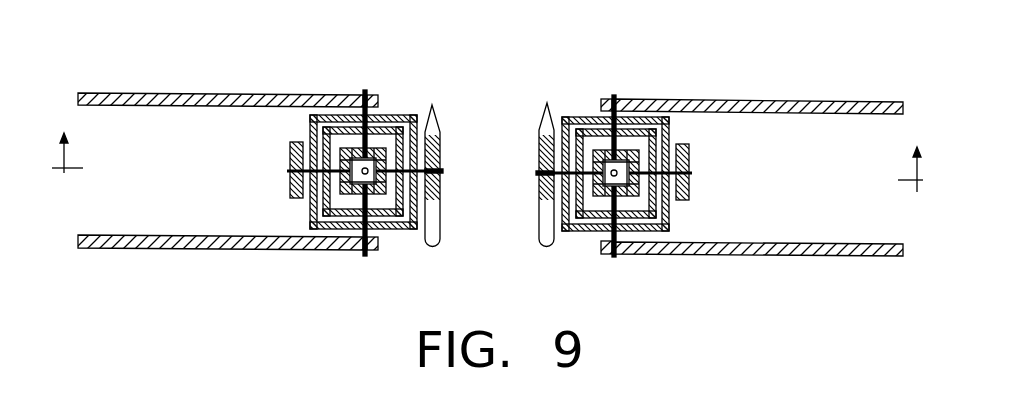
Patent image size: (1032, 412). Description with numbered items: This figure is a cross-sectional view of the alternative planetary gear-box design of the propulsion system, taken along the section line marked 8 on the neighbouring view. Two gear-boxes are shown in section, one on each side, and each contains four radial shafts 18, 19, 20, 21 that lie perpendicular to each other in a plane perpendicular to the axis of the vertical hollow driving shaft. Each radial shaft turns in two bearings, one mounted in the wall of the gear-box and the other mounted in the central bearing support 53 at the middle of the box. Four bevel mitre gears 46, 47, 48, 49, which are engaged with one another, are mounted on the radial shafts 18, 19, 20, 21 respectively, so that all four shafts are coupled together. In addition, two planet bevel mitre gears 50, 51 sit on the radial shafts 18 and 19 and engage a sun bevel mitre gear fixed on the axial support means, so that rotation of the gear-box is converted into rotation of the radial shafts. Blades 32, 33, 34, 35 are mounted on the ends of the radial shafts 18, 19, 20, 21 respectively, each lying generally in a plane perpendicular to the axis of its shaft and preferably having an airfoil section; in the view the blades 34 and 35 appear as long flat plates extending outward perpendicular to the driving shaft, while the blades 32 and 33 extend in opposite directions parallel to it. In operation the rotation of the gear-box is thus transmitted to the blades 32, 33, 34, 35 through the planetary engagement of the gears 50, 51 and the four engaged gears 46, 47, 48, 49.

The section line 8- 8 is at (487, 162).
The radial shaft 18 is at (287, 172).
The radial shaft 19 is at (538, 173).
The radial shaft 20 is at (365, 254).
The radial shaft 21 is at (365, 90).
The blade 32 is at (288, 152).
The blade 33 is at (434, 236).
The blade 34 is at (193, 250).
The blade 35 is at (197, 91).
The bevel mitre gear 46 is at (322, 180).
The bevel mitre gear 47 is at (398, 116).
The bevel mitre gear 48 is at (387, 231).
The bevel mitre gear 49 is at (387, 120).
The planet bevel mitre gear 50 is at (323, 228).
The planet bevel mitre gear 51 is at (394, 230).
The central bearing support 53 is at (322, 114).